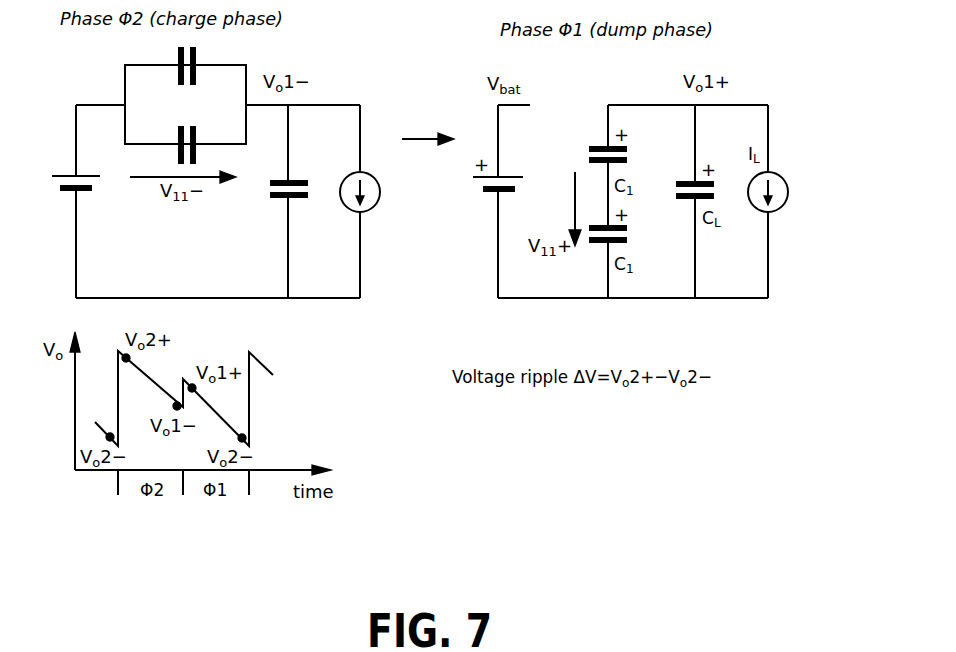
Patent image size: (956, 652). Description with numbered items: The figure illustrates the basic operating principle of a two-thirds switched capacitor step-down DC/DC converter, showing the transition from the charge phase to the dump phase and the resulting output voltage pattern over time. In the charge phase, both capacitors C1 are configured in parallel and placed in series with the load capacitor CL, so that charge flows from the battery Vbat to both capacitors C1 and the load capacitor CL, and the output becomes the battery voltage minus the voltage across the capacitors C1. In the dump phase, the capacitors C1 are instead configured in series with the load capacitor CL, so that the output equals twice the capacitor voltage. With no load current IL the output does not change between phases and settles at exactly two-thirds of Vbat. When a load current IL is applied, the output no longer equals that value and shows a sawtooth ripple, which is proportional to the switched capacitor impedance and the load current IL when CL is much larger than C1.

The capacitor C1 is at (191, 103).
The load capacitor CL is at (292, 201).
The load current IL is at (360, 201).
The battery Vbat is at (78, 180).